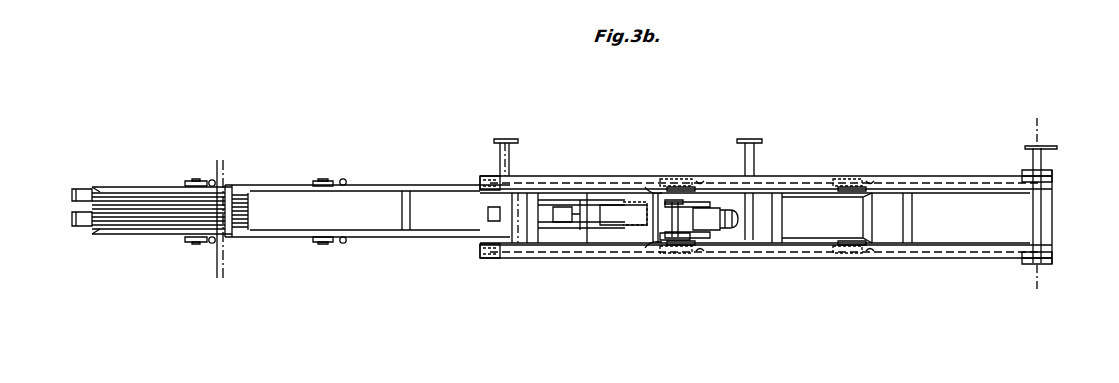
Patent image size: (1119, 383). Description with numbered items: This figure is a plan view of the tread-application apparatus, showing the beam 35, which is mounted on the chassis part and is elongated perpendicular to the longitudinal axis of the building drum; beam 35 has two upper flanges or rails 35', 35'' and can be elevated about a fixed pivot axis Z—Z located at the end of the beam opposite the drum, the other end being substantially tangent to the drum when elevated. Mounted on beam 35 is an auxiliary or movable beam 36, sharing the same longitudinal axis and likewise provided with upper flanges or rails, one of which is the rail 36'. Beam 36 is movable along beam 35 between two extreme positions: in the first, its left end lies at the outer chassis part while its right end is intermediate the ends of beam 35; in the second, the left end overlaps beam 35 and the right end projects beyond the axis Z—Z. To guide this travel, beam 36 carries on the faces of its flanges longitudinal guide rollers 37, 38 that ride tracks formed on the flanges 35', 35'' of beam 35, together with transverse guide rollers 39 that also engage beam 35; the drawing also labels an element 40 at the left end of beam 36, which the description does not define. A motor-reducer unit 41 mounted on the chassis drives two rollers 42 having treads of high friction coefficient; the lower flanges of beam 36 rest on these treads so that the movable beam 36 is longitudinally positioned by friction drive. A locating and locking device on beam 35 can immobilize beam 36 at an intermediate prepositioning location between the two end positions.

The beam 35 is at (1061, 203).
The upper flange or rail 35' is at (766, 166).
The upper flange or rail 35'' is at (766, 269).
The auxiliary or movable beam 36 is at (510, 217).
The upper flange or rail 36' is at (567, 188).
The longitudinal guide roller 37 is at (190, 180).
The longitudinal guide roller 38 is at (200, 179).
The transverse guide roller 39 is at (215, 180).
The splined shaft 40 is at (138, 190).
The motor-reducer unit 41 is at (722, 218).
The roller 42 is at (656, 184).